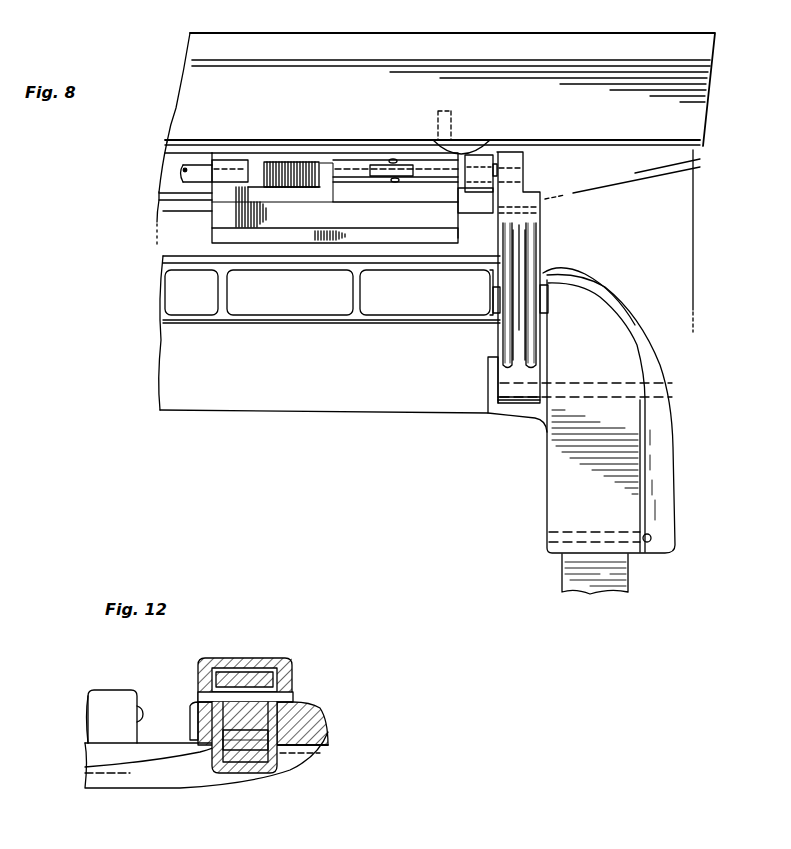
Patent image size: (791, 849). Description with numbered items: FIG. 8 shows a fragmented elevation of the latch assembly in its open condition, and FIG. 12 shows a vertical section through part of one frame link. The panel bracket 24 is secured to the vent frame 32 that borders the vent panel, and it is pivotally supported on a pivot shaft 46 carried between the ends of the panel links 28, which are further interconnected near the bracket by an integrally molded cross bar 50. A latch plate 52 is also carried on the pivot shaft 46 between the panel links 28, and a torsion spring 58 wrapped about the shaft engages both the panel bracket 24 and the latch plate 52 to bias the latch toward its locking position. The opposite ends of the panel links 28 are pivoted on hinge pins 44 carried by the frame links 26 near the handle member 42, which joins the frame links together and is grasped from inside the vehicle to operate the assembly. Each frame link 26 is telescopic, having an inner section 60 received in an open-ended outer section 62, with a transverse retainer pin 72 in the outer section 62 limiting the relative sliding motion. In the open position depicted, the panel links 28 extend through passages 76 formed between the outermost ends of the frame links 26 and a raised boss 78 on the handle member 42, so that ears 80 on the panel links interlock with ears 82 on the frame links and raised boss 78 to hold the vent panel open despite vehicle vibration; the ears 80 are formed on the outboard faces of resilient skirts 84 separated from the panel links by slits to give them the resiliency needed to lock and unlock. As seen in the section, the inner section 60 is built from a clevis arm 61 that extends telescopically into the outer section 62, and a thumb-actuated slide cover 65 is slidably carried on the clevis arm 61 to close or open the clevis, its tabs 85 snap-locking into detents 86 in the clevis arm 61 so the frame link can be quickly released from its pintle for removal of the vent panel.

In FIG. 8, the panel bracket 24 is at (378, 146).
In FIG. 8, the frame link 26 is at (586, 405).
In FIG. 12, the frame link 26 is at (271, 722).
In FIG. 8, the panel link 28 is at (530, 242).
In FIG. 8, the vent frame 32 is at (602, 80).
In FIG. 8, the handle member 42 is at (248, 400).
In FIG. 12, the handle member 42 is at (100, 780).
In FIG. 8, the hinge pin 44 is at (620, 383).
In FIG. 8, the pivot shaft 46 is at (185, 166).
In FIG. 8, the cross bar 50 is at (155, 218).
In FIG. 8, the latch plate 52 is at (205, 232).
In FIG. 8, the torsion spring 58 is at (288, 164).
In FIG. 8, the inner section 60 is at (627, 584).
In FIG. 12, the clevis arm 61 is at (217, 690).
In FIG. 8, the outer section 62 is at (672, 452).
In FIG. 12, the outer section 62 is at (325, 722).
In FIG. 12, the slide cover 65 is at (258, 772).
In FIG. 8, the retainer pin 72 is at (600, 536).
In FIG. 12, the retainer pin 72 is at (282, 698).
In FIG. 8, the passage 76 is at (548, 262).
In FIG. 8, the raised boss 78 is at (312, 323).
In FIG. 12, the raised boss 78 is at (88, 713).
In FIG. 8, the ear 80 is at (562, 272).
In FIG. 8, the ear 82 is at (548, 305).
In FIG. 12, the ear 82 is at (140, 710).
In FIG. 8, the resilient skirt 84 is at (504, 233).
In FIG. 12, the tab 85 is at (240, 740).
In FIG. 8, the detent 86 is at (535, 337).